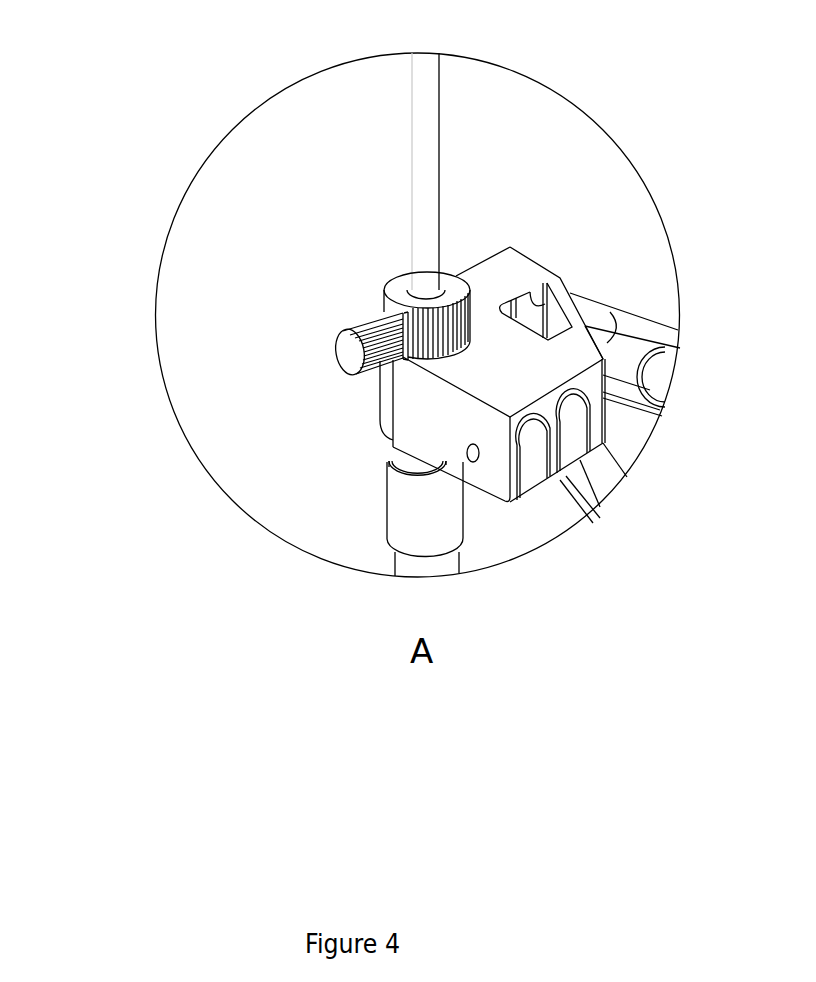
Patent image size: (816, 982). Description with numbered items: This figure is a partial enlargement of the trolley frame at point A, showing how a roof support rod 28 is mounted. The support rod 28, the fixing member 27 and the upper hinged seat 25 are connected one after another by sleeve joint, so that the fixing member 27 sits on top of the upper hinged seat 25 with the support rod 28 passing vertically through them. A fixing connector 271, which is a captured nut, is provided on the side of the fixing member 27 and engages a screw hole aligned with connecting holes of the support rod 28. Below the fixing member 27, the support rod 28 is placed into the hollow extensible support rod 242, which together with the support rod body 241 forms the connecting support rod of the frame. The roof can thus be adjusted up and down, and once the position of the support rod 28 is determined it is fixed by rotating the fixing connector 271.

The support rod 28 is at (421, 206).
The fixing member 27 is at (388, 291).
The fixing connector 271 is at (350, 346).
The upper hinged seat 25 is at (448, 437).
The extensible support rod 242 is at (400, 461).
The support rod body 241 is at (440, 521).